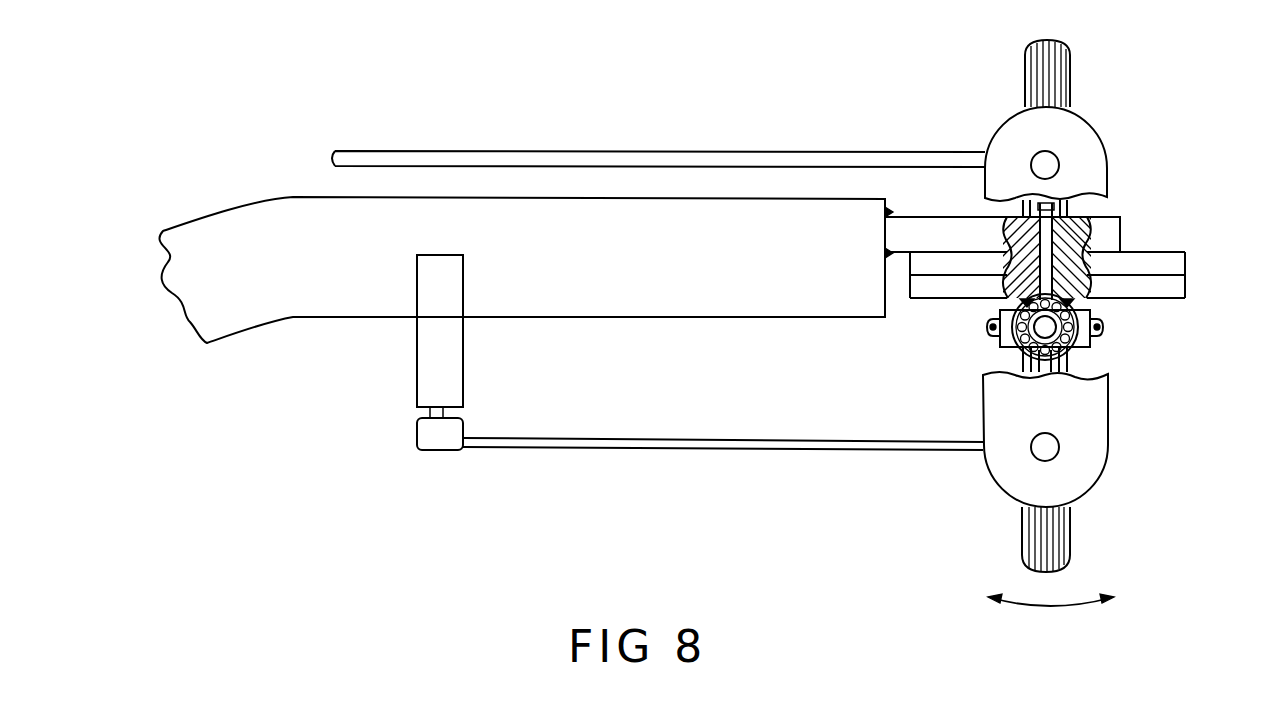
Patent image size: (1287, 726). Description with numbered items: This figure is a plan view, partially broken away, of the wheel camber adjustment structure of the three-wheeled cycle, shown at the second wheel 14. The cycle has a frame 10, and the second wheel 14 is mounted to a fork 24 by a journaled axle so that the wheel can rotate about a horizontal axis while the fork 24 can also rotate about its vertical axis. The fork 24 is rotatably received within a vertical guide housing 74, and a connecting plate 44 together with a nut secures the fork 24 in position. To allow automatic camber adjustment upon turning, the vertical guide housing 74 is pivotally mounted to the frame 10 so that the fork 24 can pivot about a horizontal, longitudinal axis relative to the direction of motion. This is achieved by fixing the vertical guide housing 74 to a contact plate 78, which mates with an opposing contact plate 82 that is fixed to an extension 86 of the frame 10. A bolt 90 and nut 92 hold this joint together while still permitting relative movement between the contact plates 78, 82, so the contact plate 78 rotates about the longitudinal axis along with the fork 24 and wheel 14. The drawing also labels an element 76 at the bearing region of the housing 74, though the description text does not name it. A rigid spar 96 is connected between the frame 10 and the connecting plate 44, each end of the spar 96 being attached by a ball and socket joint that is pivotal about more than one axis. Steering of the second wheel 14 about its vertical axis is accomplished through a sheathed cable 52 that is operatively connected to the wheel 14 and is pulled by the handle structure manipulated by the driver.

The frame 10 is at (608, 322).
The sheathed cable 52 is at (429, 150).
The extension 86 is at (923, 217).
The connecting plate 44 is at (1108, 148).
The nut 92 is at (1055, 212).
The contact plate 82 is at (1186, 262).
The contact plate 78 is at (1186, 285).
The bolt 90 is at (1013, 283).
The bolt 76 is at (1098, 323).
The vertical guide housing 74 is at (1020, 350).
The fork 24 is at (1075, 352).
The second wheel 14 is at (1074, 563).
The rigid spar 96 is at (663, 450).